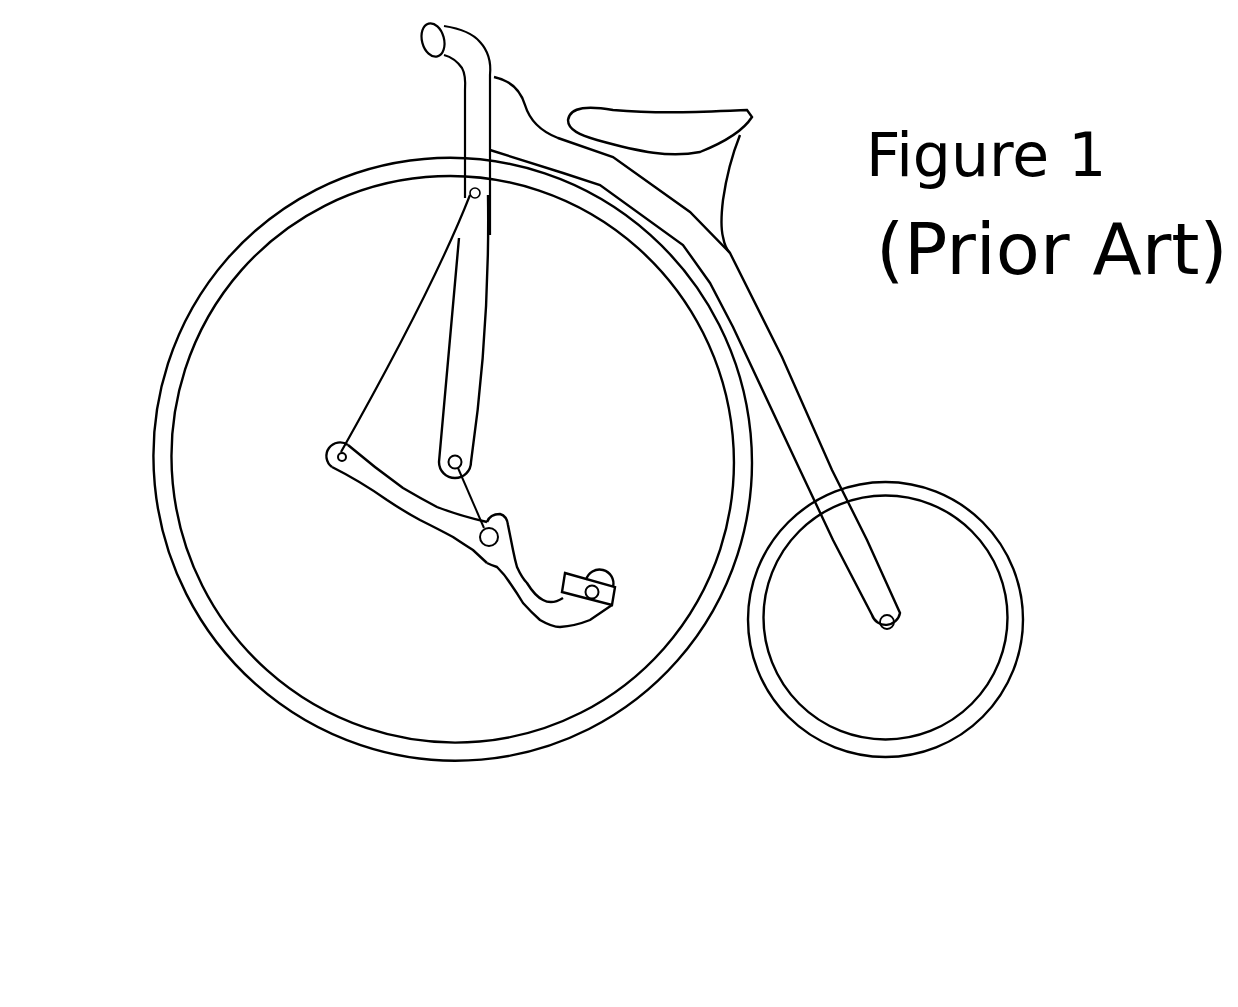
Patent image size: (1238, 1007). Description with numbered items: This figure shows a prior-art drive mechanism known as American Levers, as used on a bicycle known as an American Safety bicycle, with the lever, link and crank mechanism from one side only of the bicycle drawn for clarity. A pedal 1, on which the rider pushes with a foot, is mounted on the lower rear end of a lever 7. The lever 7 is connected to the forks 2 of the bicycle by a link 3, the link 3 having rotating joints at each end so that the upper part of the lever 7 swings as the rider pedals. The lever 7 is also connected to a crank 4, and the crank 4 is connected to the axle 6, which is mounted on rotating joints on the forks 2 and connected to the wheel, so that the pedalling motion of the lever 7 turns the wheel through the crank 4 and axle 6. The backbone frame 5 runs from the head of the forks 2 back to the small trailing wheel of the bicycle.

The pedal 1 is at (583, 565).
The forks 2 is at (487, 328).
The link 3 is at (397, 347).
The crank 4 is at (485, 500).
The backbone frame 5 is at (815, 413).
The axle 6 is at (456, 448).
The lever 7 is at (417, 520).